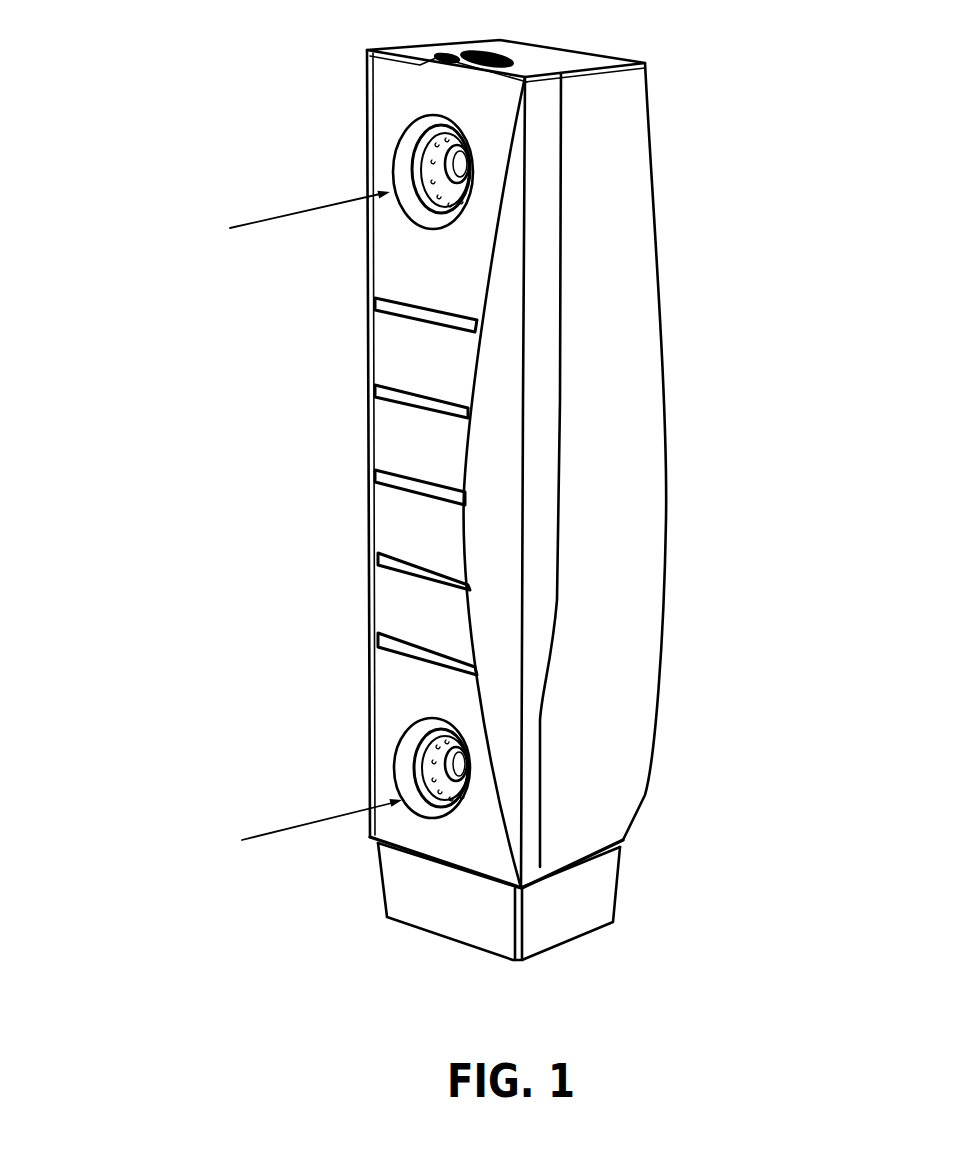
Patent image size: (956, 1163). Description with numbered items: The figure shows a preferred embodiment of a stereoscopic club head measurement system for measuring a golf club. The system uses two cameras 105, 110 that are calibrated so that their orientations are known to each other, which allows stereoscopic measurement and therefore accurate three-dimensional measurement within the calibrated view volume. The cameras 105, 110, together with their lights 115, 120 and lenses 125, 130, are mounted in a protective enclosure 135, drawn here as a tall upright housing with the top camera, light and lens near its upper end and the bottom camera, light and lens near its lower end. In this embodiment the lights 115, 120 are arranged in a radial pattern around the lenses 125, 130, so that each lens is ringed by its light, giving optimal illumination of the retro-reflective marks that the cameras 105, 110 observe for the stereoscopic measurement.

The camera 105 is at (430, 157).
The camera 110 is at (421, 765).
The light 115 is at (395, 172).
The light 120 is at (423, 777).
The lens 125 is at (414, 144).
The lens 130 is at (417, 742).
The protective enclosure 135 is at (627, 445).